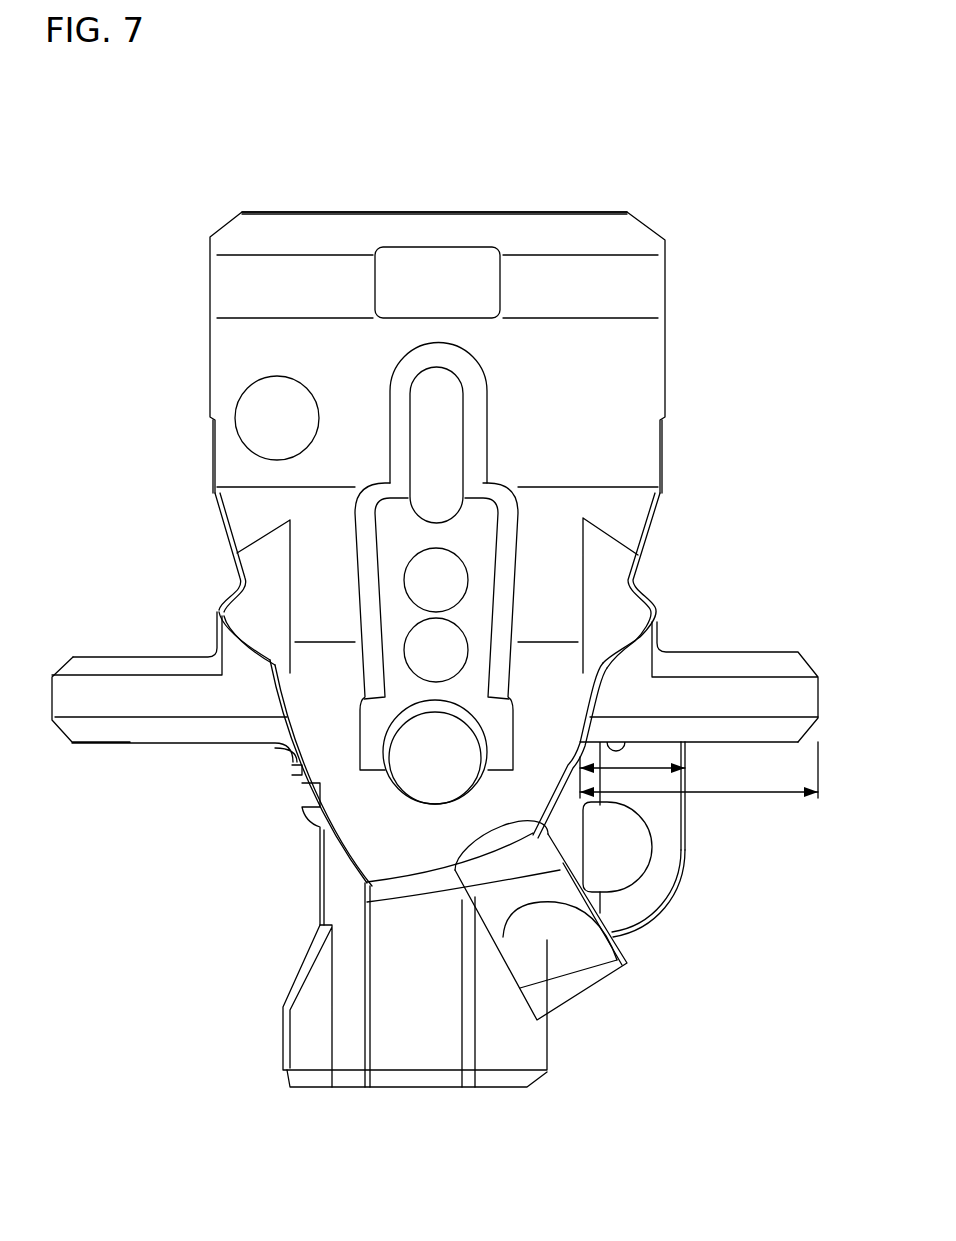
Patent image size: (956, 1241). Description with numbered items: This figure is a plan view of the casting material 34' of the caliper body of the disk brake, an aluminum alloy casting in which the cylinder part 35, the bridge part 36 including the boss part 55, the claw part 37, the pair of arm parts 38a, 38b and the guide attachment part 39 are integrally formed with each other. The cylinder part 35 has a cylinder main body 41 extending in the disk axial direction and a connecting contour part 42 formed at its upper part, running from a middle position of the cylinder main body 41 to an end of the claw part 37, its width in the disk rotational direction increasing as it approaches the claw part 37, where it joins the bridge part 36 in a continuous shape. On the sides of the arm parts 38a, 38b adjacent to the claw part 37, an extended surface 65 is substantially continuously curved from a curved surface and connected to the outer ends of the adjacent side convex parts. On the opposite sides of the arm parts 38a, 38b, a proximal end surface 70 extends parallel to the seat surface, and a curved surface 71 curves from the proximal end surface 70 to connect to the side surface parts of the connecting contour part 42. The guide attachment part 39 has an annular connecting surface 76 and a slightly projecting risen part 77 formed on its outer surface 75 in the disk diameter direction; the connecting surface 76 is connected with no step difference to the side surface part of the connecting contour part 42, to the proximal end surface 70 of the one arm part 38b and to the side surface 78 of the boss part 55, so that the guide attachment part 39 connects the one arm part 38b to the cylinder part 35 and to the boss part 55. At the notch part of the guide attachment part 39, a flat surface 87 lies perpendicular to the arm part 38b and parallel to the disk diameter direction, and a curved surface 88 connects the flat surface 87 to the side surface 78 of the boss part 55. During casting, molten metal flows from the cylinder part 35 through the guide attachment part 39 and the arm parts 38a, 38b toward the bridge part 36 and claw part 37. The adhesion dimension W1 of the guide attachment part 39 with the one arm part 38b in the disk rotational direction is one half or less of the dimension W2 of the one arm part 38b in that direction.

The casting material 34' is at (491, 292).
The claw part 37 is at (450, 212).
The bridge part 36 is at (613, 380).
The extended surface 65 is at (207, 650).
The arm part 38a is at (107, 675).
The arm part 38b is at (713, 695).
The connecting contour part 42 is at (323, 755).
The curved surface 71 is at (583, 677).
The proximal end surface 70 is at (627, 742).
The adhesion dimension W1 is at (640, 767).
The dimension of the one arm part W2 is at (717, 795).
The flat surface 87 is at (688, 830).
The risen part 77 is at (670, 847).
The curved surface 88 is at (647, 905).
The outer surface 75 is at (622, 862).
The guide attachment part 39 is at (625, 917).
The boss part 55 is at (540, 950).
The cylinder part 35 is at (345, 887).
The connecting surface 76 is at (367, 902).
The side surface 78 is at (470, 890).
The cylinder main body 41 is at (418, 1052).